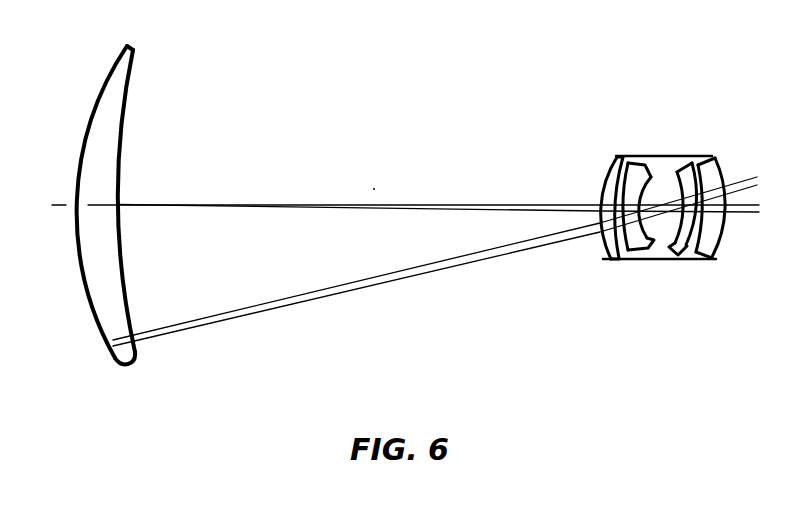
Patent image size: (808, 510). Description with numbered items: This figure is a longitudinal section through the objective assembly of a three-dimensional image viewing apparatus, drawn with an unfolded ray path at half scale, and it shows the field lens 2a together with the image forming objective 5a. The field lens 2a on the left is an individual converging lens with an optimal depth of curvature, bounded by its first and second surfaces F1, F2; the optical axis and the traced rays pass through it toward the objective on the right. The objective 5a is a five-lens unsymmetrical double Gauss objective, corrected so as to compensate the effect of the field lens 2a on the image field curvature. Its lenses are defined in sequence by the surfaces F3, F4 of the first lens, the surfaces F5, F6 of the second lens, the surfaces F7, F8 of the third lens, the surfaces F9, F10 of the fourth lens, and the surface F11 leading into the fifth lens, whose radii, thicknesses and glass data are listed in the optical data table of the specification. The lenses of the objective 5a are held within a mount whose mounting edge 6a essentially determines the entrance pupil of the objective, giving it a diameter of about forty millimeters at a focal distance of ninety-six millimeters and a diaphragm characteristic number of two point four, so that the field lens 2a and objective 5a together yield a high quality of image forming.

The field lens 2a is at (128, 47).
The first lens surface F1 is at (113, 67).
The second lens surface F2 is at (130, 110).
The objective 5a is at (598, 247).
The third lens surface F3 is at (598, 182).
The fourth lens surface F4 is at (618, 260).
The fifth lens surface F5 is at (632, 165).
The sixth lens surface F6 is at (650, 167).
The mounting edge 6a is at (680, 157).
The seventh lens surface F7 is at (645, 260).
The eighth lens surface F8 is at (680, 258).
The ninth lens surface F9 is at (708, 258).
The tenth lens surface F10 is at (700, 166).
The eleventh lens surface F11 is at (723, 178).